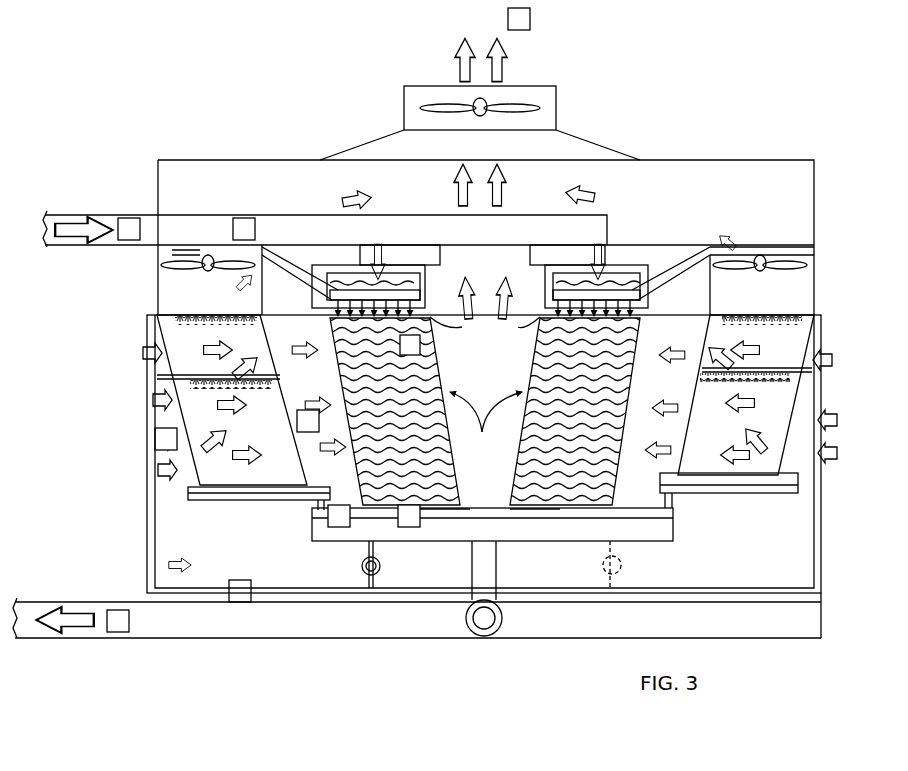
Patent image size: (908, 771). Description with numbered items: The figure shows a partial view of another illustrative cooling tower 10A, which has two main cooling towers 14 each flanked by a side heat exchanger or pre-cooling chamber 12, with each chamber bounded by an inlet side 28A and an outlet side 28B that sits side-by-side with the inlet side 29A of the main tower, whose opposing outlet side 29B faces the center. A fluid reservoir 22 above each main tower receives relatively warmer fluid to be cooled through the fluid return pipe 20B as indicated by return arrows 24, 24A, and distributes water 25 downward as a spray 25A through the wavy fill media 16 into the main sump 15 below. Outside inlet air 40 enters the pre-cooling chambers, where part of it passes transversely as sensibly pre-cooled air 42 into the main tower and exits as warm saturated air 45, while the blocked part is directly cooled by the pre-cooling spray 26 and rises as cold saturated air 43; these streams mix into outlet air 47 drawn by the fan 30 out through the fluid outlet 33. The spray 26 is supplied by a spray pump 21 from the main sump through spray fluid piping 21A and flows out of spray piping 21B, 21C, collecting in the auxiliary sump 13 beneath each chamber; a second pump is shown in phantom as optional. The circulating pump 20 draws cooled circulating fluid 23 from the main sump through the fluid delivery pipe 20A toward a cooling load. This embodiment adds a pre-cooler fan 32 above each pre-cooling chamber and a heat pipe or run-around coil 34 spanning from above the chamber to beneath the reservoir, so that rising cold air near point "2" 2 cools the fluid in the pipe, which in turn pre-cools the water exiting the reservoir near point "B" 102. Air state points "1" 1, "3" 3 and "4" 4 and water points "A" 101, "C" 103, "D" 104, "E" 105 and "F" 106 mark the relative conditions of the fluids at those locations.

The point "1" 1 is at (155, 440).
The point "2" 2 is at (245, 217).
The point "3" 3 is at (297, 425).
The point "4" 4 is at (531, 20).
The cooling tower 10A is at (806, 96).
The pre-cooling chamber 12 is at (165, 322).
The auxiliary sump 13 is at (190, 496).
The main cooling tower 14 is at (443, 509).
The main sump 15 is at (670, 528).
The fill media 16 is at (405, 424).
The circulating pump 20 is at (503, 621).
The fluid delivery pipe 20A is at (246, 638).
The fluid return pipe 20B is at (196, 214).
The spray pump 21 is at (361, 566).
The spray fluid piping 21A is at (147, 548).
The spray piping 21B is at (151, 313).
The spray piping 21C is at (190, 385).
The fluid reservoir 22 is at (410, 273).
The circulating cooling fluid 23 is at (58, 640).
The fluid to be cooled return arrow 24 is at (58, 214).
The fluid to be cooled return arrow 24A is at (383, 262).
The fluid to be cooled 25 is at (330, 296).
The fluid to be cooled spray 25A is at (484, 319).
The pre-cooling spray 26 is at (190, 378).
The inlet side of pre-cooling chamber 28A is at (196, 478).
The outlet side of pre-cooling chamber 28B is at (263, 320).
The inlet side of main tower 29A is at (318, 504).
The outlet side of main tower 29B is at (486, 422).
The fan 30 is at (424, 106).
The pre-cooler fan 32 is at (207, 271).
The fluid outlet 33 is at (540, 86).
The heat pipe 34 is at (158, 252).
The inlet air 40 is at (158, 470).
The pre-cooled cooling fluid 42 is at (252, 350).
The cold saturated air 43 is at (340, 203).
The warm saturated air 45 is at (458, 178).
The outlet air 47 is at (503, 60).
The point "A" 101 is at (128, 217).
The point "B" 102 is at (420, 346).
The point "C" 103 is at (408, 527).
The point "D" 104 is at (240, 580).
The point "E" 105 is at (328, 520).
The point "F" 106 is at (130, 627).